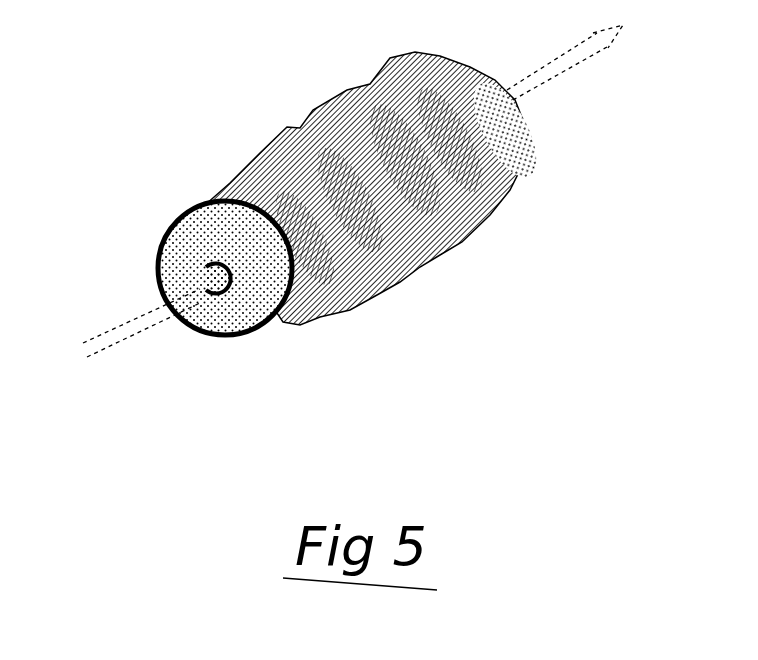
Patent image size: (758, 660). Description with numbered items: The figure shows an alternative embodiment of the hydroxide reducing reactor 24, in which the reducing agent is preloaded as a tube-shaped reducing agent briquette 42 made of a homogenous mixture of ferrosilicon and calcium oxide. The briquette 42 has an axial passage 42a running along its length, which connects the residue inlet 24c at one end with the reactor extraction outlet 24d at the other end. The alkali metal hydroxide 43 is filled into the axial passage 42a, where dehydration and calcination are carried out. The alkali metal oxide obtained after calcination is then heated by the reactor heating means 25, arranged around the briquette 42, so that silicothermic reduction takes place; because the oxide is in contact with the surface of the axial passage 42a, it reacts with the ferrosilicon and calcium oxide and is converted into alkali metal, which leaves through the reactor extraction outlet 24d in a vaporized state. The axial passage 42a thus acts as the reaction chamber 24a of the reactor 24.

The hydroxide reducing reactor 24 is at (207, 197).
The reaction chamber 24a is at (247, 247).
The residue inlet 24c is at (210, 298).
The reactor extraction outlet 24d is at (497, 110).
The reactor heating means 25 is at (462, 244).
The tube-shaped reducing agent briquette 42 is at (247, 300).
The axial passage 42a is at (227, 247).
The metal hydroxide 43 is at (200, 280).